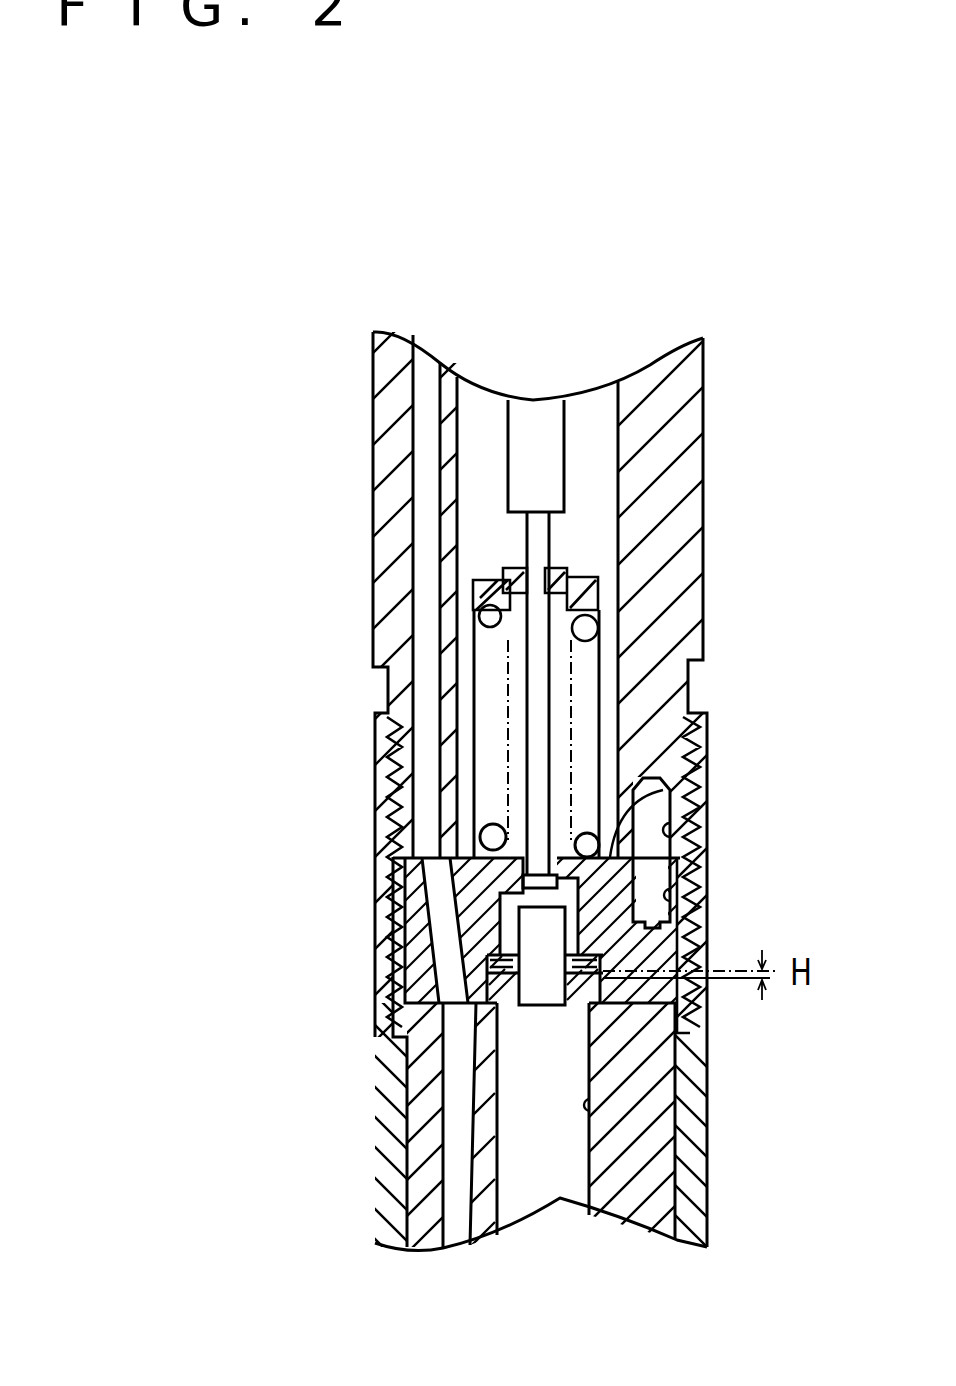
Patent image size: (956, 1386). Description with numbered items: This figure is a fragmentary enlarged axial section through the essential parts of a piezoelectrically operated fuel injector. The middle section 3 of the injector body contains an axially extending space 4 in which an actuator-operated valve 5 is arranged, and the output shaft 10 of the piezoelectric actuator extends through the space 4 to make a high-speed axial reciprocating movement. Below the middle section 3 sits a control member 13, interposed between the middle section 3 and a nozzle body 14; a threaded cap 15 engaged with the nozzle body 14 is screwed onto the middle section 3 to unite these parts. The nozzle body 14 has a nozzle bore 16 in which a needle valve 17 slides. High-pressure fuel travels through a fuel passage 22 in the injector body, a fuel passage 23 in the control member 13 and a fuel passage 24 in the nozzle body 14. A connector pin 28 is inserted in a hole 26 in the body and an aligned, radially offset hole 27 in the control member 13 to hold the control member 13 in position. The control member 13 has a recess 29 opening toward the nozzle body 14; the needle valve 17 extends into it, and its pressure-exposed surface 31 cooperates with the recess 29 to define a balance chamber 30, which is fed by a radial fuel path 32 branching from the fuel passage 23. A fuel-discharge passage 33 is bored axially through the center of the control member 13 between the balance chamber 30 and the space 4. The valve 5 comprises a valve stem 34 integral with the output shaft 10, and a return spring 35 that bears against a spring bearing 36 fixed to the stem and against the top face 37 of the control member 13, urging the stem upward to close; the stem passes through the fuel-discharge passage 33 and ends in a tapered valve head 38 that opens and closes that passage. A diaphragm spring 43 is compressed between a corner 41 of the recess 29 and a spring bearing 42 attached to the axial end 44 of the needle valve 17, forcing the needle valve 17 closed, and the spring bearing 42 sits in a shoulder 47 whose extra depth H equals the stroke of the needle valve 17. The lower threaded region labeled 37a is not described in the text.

The middle section 3 is at (685, 425).
The space 4 is at (595, 490).
The valve 5 is at (555, 763).
The output shaft 10 is at (540, 432).
The control member 13 is at (605, 985).
The nozzle body 14 is at (622, 1138).
The threaded cap 15 is at (690, 1197).
The nozzle bore 16 is at (592, 1105).
The needle valve 17 is at (540, 1160).
The fuel passage 22 is at (435, 468).
The fuel passage 23 is at (440, 907).
The fuel passage 24 is at (457, 1172).
The hole 26 is at (683, 812).
The hole 27 is at (657, 882).
The connector pin 28 is at (670, 875).
The recess 29 is at (713, 936).
The balance chamber 30 is at (520, 885).
The pressure-exposed surface 31 is at (420, 932).
The fuel path 32 is at (407, 1105).
The fuel-discharge passage 33 is at (595, 870).
The valve stem 34 is at (530, 650).
The return spring 35 is at (490, 690).
The spring bearing 36 is at (592, 598).
The top face 37 is at (612, 852).
The pin lower portion 37a is at (408, 1045).
The tapered valve head 38 is at (540, 875).
The corner 41 is at (682, 957).
The spring bearing 42 is at (503, 985).
The diaphragm spring 43 is at (497, 962).
The axial end 44 is at (545, 988).
The shoulder 47 is at (640, 1002).